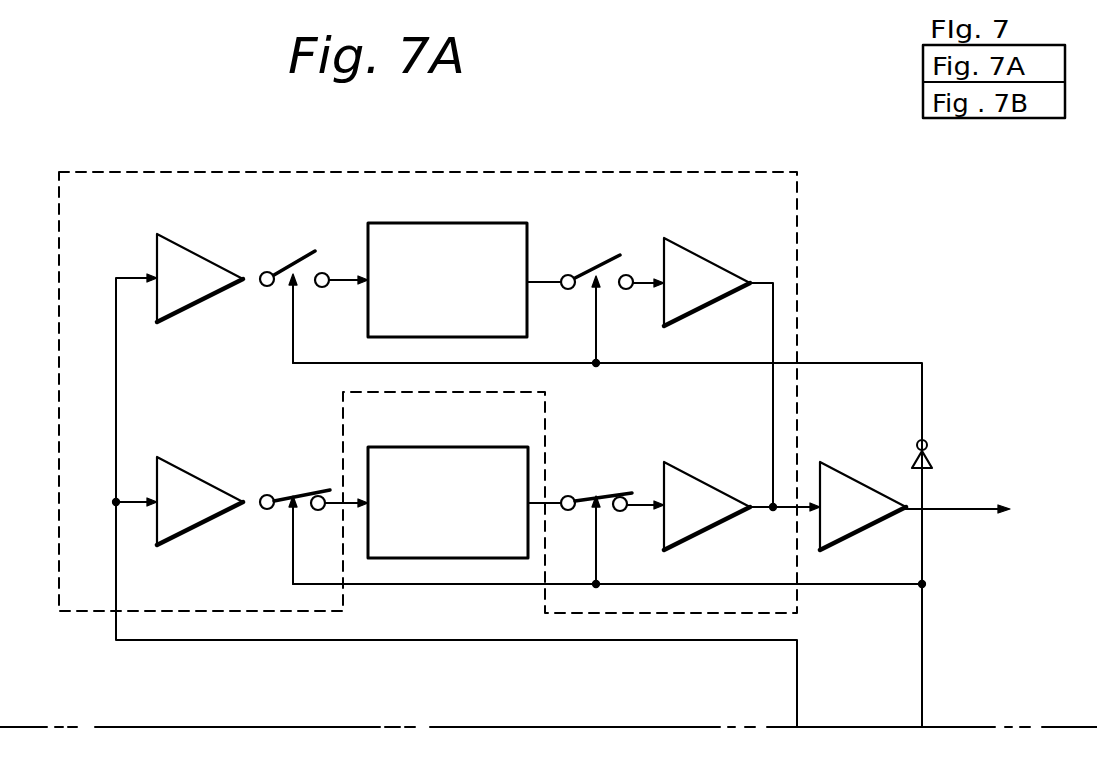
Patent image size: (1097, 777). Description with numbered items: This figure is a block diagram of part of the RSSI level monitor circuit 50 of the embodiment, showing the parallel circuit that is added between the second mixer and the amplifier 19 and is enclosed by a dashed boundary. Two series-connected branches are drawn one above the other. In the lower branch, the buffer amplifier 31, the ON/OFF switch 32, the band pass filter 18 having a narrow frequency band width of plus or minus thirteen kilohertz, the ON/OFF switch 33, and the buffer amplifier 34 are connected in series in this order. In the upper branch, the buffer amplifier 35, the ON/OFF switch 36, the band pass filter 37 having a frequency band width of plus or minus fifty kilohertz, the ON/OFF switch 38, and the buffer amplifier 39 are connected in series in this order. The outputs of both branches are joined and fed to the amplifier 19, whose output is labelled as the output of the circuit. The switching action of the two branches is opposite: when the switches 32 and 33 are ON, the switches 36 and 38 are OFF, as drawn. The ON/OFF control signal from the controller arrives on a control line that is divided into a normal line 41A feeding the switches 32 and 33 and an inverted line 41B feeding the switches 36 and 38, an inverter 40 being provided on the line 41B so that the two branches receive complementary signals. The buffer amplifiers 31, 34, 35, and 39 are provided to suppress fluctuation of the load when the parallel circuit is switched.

The band pass filter 18 is at (447, 447).
The amplifier 19 is at (855, 476).
The buffer amplifier 31 is at (201, 477).
The ON/OFF switch 32 is at (285, 490).
The ON/OFF switch 33 is at (595, 492).
The buffer amplifier 34 is at (698, 472).
The buffer amplifier 35 is at (201, 258).
The ON/OFF switch 36 is at (295, 258).
The band pass filter 37 is at (436, 223).
The ON/OFF switch 38 is at (591, 256).
The buffer amplifier 39 is at (703, 256).
The inverter 40 is at (932, 456).
The normal line 41A is at (840, 588).
The inverted line 41B is at (925, 390).
The RSSI level monitor circuit 50 is at (862, 220).